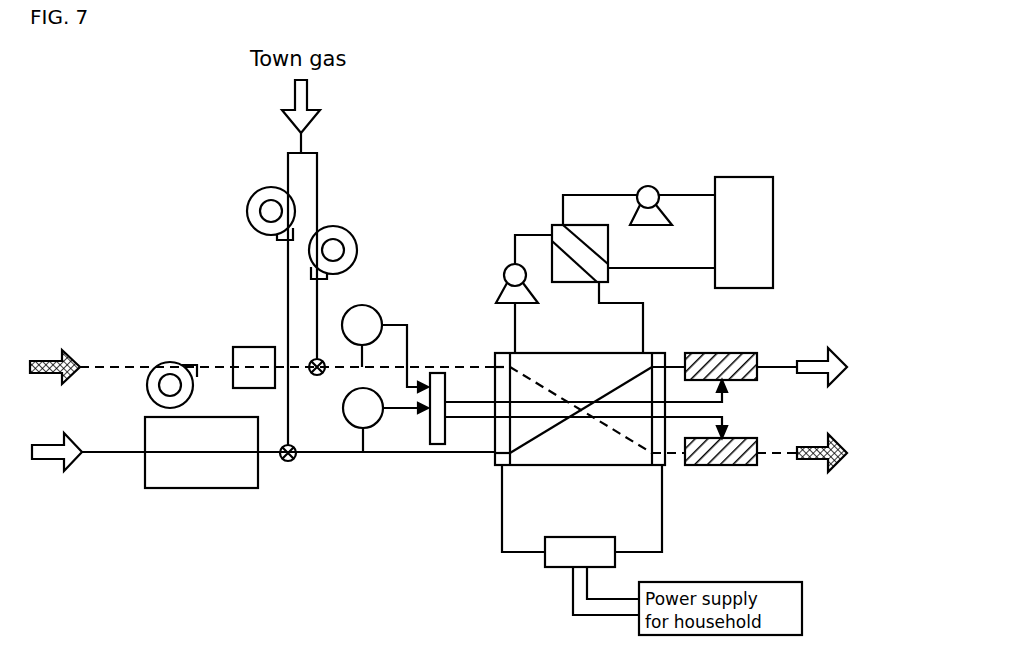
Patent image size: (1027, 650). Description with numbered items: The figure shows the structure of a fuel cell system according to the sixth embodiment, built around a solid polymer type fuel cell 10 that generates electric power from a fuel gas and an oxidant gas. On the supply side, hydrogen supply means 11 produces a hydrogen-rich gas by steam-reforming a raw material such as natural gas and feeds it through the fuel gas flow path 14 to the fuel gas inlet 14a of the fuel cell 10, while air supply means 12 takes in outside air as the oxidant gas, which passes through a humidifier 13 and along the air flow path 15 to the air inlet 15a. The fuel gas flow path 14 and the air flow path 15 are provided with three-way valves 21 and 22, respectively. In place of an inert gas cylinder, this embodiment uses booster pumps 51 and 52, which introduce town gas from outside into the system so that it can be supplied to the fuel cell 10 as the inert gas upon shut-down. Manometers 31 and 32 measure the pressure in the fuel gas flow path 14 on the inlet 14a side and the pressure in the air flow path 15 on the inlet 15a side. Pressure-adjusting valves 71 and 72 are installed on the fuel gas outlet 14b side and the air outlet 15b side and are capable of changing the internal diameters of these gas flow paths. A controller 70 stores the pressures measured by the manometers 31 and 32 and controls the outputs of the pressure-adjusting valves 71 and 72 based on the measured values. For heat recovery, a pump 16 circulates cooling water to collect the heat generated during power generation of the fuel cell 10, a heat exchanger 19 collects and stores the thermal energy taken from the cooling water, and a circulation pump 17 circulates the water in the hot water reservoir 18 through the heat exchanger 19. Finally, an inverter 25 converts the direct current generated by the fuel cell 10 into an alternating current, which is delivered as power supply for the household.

The fuel cell 10 is at (592, 387).
The hydrogen supply means 11 is at (195, 489).
The air supply means 12 is at (172, 363).
The humidifier 13 is at (250, 346).
The fuel gas flow path 14 is at (100, 455).
The fuel gas inlet 14a is at (496, 462).
The fuel gas outlet 14b is at (668, 364).
The air flow path 15 is at (100, 366).
The air inlet 15a is at (497, 362).
The air outlet 15b is at (668, 460).
The pump 16 is at (522, 278).
The circulation pump 17 is at (648, 186).
The hot water reservoir 18 is at (774, 190).
The heat exchanger 19 is at (552, 228).
The three-way valve 21 is at (289, 462).
The three-way valve 22 is at (317, 376).
The inverter 25 is at (543, 566).
The manometer 31 is at (355, 428).
The manometer 32 is at (366, 306).
The booster pump 51 is at (256, 200).
The booster pump 52 is at (341, 228).
The controller 70 is at (440, 372).
The pressure-adjusting valve 71 is at (748, 352).
The pressure-adjusting valve 72 is at (752, 468).